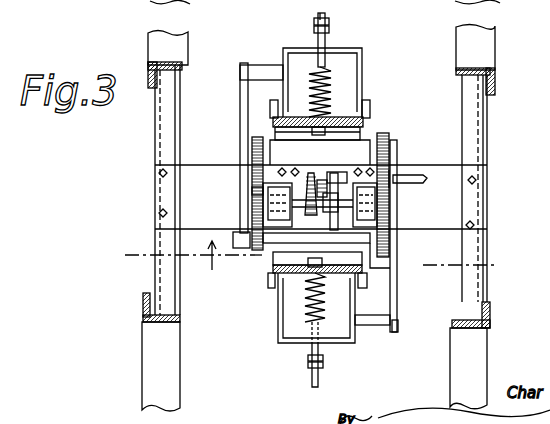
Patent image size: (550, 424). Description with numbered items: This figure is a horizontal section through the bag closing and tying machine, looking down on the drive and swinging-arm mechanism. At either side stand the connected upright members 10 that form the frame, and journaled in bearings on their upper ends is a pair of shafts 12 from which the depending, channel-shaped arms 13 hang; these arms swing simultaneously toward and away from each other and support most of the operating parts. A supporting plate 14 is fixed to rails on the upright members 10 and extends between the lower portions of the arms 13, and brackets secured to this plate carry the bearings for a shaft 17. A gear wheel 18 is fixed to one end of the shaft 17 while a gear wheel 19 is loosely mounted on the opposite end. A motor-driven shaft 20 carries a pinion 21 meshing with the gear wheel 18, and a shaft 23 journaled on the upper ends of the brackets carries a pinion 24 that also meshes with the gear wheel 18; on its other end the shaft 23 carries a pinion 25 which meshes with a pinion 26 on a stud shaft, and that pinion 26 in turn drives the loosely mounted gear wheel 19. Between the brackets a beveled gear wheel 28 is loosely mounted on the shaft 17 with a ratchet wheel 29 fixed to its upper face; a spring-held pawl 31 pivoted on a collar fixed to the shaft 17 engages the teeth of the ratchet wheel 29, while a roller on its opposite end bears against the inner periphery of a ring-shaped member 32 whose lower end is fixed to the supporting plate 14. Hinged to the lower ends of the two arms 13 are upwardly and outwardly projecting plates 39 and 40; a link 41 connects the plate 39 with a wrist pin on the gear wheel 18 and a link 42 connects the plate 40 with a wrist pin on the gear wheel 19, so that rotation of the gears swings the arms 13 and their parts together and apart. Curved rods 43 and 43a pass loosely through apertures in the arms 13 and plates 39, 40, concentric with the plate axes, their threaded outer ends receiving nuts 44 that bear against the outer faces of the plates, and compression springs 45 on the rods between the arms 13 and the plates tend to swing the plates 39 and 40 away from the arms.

The upright members 10 is at (162, 50).
The shafts 12 is at (306, 257).
The depending members (arms) 13 is at (362, 125).
The supporting plate 14 is at (180, 190).
The shaft 17 is at (342, 180).
The gear wheel 18 is at (383, 263).
The gear wheel 19 is at (253, 137).
The shaft 20 is at (423, 181).
The pinion 21 is at (393, 175).
The shaft 23 is at (283, 214).
The pinion 24 is at (393, 238).
The pinion 25 is at (250, 220).
The pinion 26 is at (252, 185).
The beveled gear wheel 28 is at (310, 178).
The ratchet wheel 29 is at (318, 177).
The spring-held pawl 31 is at (322, 219).
The ring-shaped member 32 is at (357, 214).
The plate 39 is at (283, 335).
The plate 40 is at (358, 55).
The link 41 is at (397, 307).
The link 42 is at (243, 100).
The curved rod 43 is at (313, 382).
The curved rod 43a is at (328, 17).
The nuts 44 is at (316, 24).
The compression springs 45 is at (317, 70).